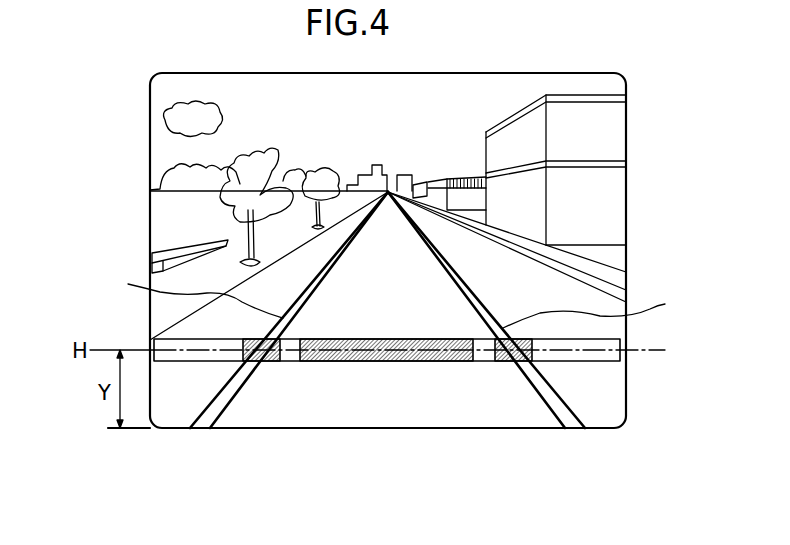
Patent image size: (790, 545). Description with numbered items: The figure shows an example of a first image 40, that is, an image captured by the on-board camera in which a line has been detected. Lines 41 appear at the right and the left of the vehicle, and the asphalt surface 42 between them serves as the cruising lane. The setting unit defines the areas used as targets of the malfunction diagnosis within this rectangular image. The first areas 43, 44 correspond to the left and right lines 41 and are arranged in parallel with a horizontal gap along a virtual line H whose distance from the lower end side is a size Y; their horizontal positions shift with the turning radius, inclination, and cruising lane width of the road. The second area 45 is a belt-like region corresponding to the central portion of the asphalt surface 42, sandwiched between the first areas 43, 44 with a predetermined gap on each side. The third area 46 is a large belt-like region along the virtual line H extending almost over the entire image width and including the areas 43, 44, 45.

The first image 40 is at (127, 141).
The line 41 is at (396, 297).
The asphalt surface 42 is at (406, 300).
The first area 43 is at (268, 363).
The first area 44 is at (505, 363).
The second area 45 is at (376, 363).
The third area 46 is at (586, 363).